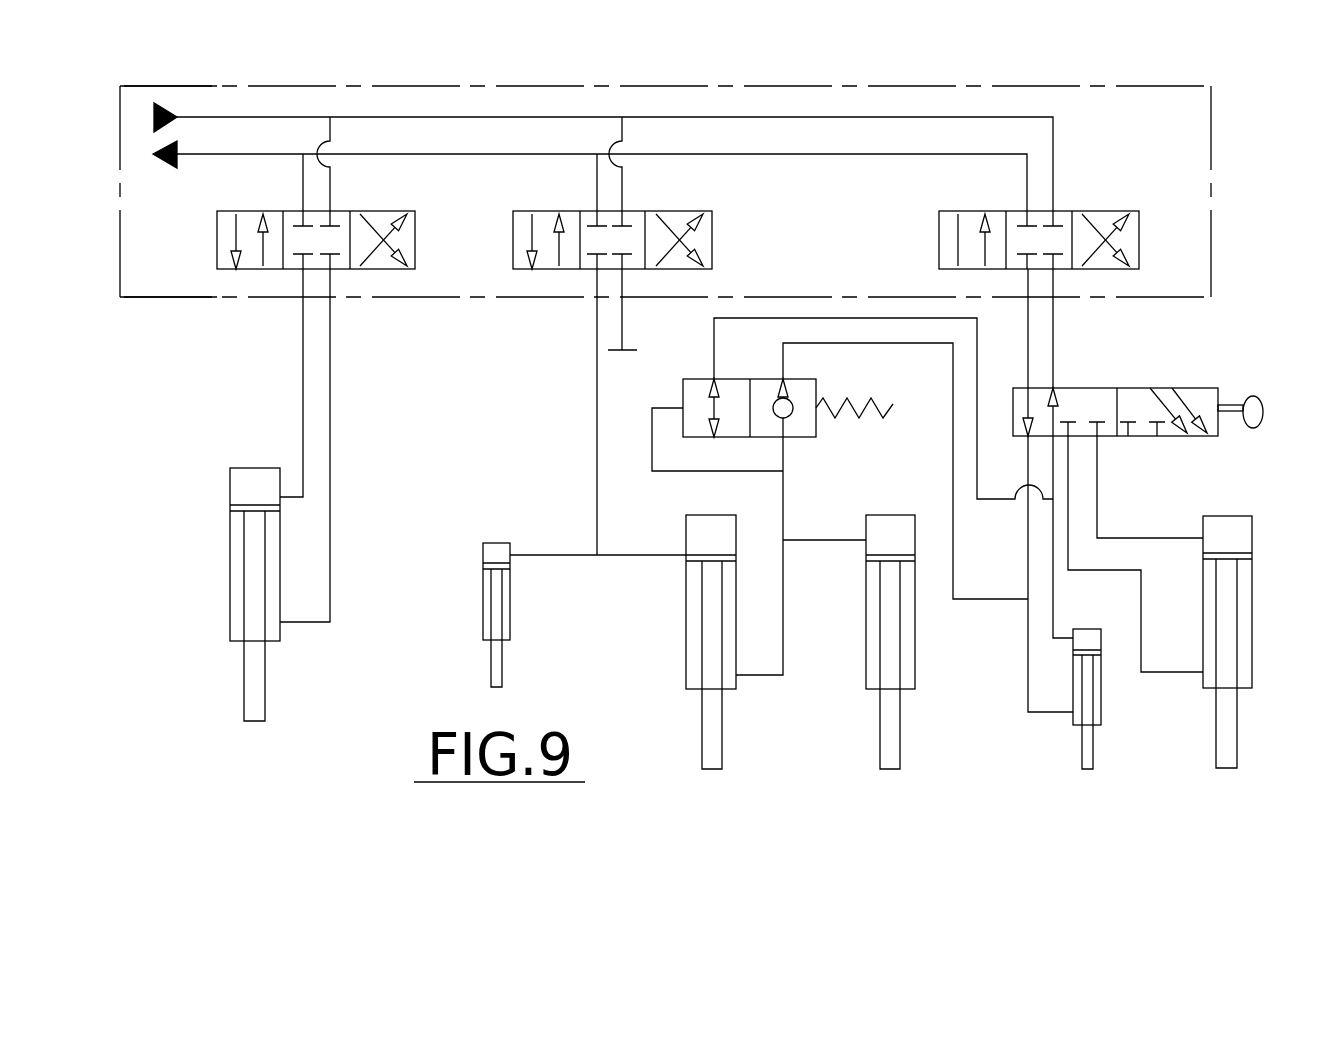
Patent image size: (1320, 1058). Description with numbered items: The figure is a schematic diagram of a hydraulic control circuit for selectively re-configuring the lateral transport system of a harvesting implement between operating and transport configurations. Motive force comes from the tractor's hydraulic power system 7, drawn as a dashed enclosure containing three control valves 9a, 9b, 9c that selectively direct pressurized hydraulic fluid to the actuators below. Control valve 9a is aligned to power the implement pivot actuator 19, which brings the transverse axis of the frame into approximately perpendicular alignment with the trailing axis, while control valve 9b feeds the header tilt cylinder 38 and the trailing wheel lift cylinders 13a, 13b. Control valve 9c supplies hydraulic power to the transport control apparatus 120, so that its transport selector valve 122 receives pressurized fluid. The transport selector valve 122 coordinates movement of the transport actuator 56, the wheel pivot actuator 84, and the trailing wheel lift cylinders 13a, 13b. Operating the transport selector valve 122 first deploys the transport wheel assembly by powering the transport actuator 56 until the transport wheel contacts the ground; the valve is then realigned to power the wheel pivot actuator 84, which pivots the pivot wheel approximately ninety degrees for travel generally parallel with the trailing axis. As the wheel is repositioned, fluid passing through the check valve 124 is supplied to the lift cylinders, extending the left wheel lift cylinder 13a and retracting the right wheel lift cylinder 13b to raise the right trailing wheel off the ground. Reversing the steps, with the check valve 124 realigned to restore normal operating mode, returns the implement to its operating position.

The hydraulic power system 7 is at (1231, 128).
The control valve 9a is at (361, 211).
The control valve 9b is at (670, 212).
The control valve 9c is at (1095, 212).
The implement pivot actuator 19 is at (230, 580).
The header tilt cylinder 38 is at (483, 594).
The left wheel lift cylinder 13a is at (868, 662).
The right wheel lift cylinder 13b is at (693, 645).
The transport actuator 56 is at (1243, 640).
The wheel pivot actuator 84 is at (1095, 697).
The transport control apparatus 120 is at (985, 471).
The transport selector valve 122 is at (1137, 387).
The check valve 124 is at (800, 378).